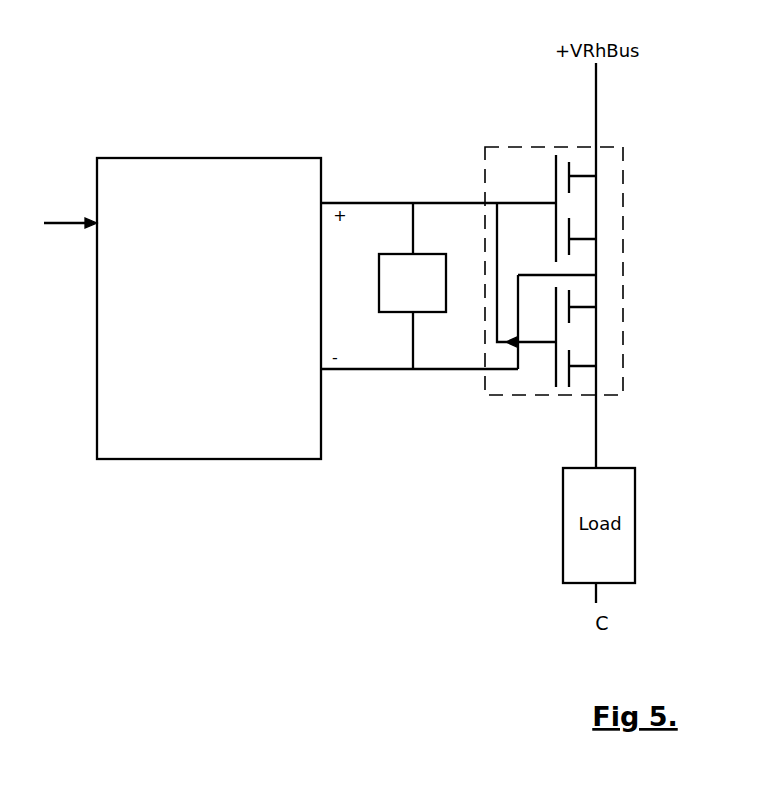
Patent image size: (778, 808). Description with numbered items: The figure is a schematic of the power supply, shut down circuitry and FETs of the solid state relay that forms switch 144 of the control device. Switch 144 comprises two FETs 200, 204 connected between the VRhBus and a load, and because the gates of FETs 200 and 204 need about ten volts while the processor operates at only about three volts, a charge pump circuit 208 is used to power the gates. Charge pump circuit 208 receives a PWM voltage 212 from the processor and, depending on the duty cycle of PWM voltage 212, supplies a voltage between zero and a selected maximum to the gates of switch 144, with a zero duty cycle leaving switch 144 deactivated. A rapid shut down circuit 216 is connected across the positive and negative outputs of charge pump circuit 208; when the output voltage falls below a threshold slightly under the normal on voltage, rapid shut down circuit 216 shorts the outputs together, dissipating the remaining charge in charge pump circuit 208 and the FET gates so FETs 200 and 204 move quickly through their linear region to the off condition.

The switch 144 is at (485, 146).
The FET 200 is at (545, 175).
The FET 204 is at (537, 365).
The charge pump circuit 208 is at (209, 308).
The PWM voltage 212 is at (64, 213).
The rapid shut down circuit 216 is at (412, 283).